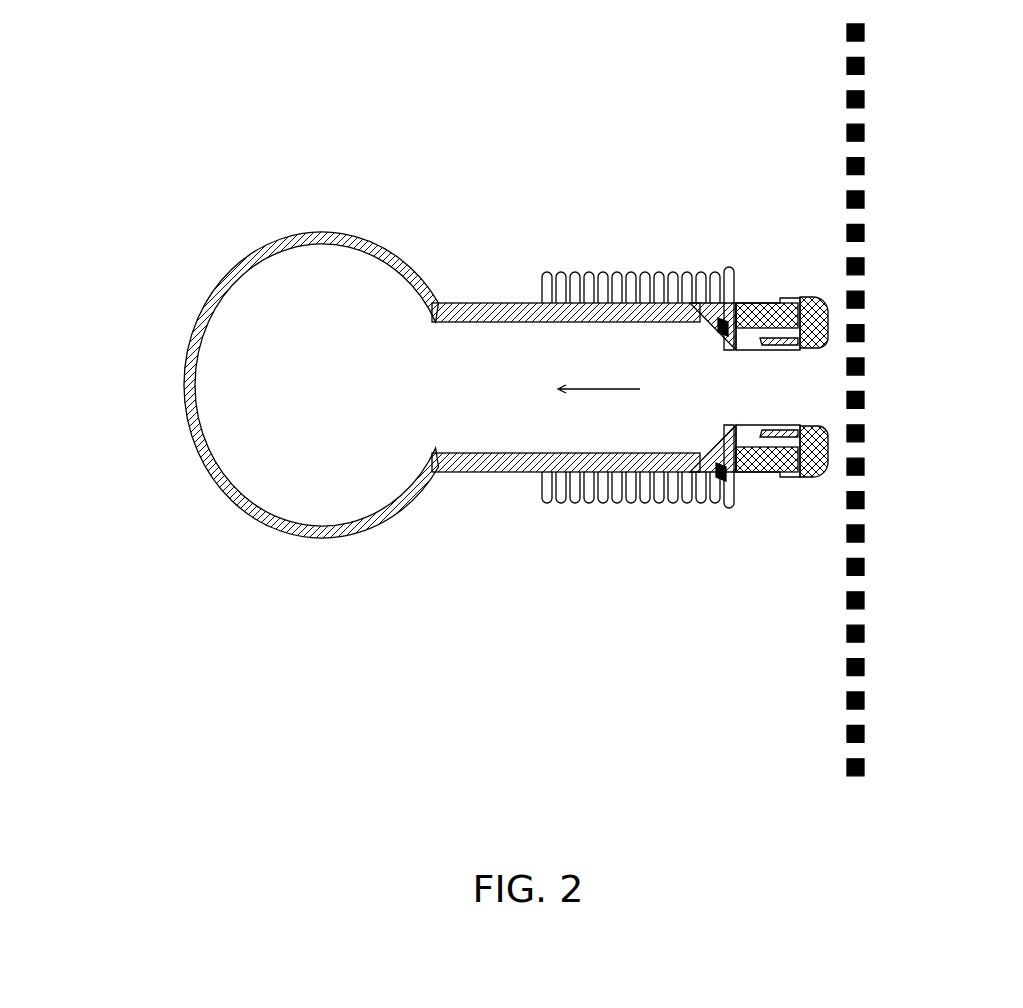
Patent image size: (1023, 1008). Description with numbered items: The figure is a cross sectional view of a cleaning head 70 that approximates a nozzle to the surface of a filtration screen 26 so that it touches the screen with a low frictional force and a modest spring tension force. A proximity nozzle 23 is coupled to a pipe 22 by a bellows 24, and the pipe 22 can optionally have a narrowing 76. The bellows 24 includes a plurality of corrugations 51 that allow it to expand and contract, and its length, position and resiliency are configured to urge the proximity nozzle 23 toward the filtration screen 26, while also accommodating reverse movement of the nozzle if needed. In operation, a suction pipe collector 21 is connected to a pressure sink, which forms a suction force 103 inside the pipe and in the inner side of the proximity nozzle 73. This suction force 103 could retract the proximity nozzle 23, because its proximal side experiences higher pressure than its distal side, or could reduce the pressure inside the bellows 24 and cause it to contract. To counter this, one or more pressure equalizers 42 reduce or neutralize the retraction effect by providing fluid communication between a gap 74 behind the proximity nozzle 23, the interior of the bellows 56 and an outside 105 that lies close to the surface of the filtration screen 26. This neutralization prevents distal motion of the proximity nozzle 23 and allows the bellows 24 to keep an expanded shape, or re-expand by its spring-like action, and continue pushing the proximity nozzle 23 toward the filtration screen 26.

The suction pipe collector 21 is at (252, 377).
The pipe 22 is at (463, 303).
The proximity nozzle 23 is at (757, 303).
The bellows 24 is at (596, 276).
The filtration screen 26 is at (857, 712).
The pressure equalizer 42 is at (785, 476).
The corrugations 51 is at (563, 502).
The interior of bellows 56 is at (723, 440).
The cleaning head 70 is at (371, 690).
The inner side of proximity nozzle 73 is at (798, 348).
The gap 74 is at (717, 478).
The narrowing 76 is at (720, 432).
The suction force 103 is at (478, 397).
The outside 105 is at (802, 359).